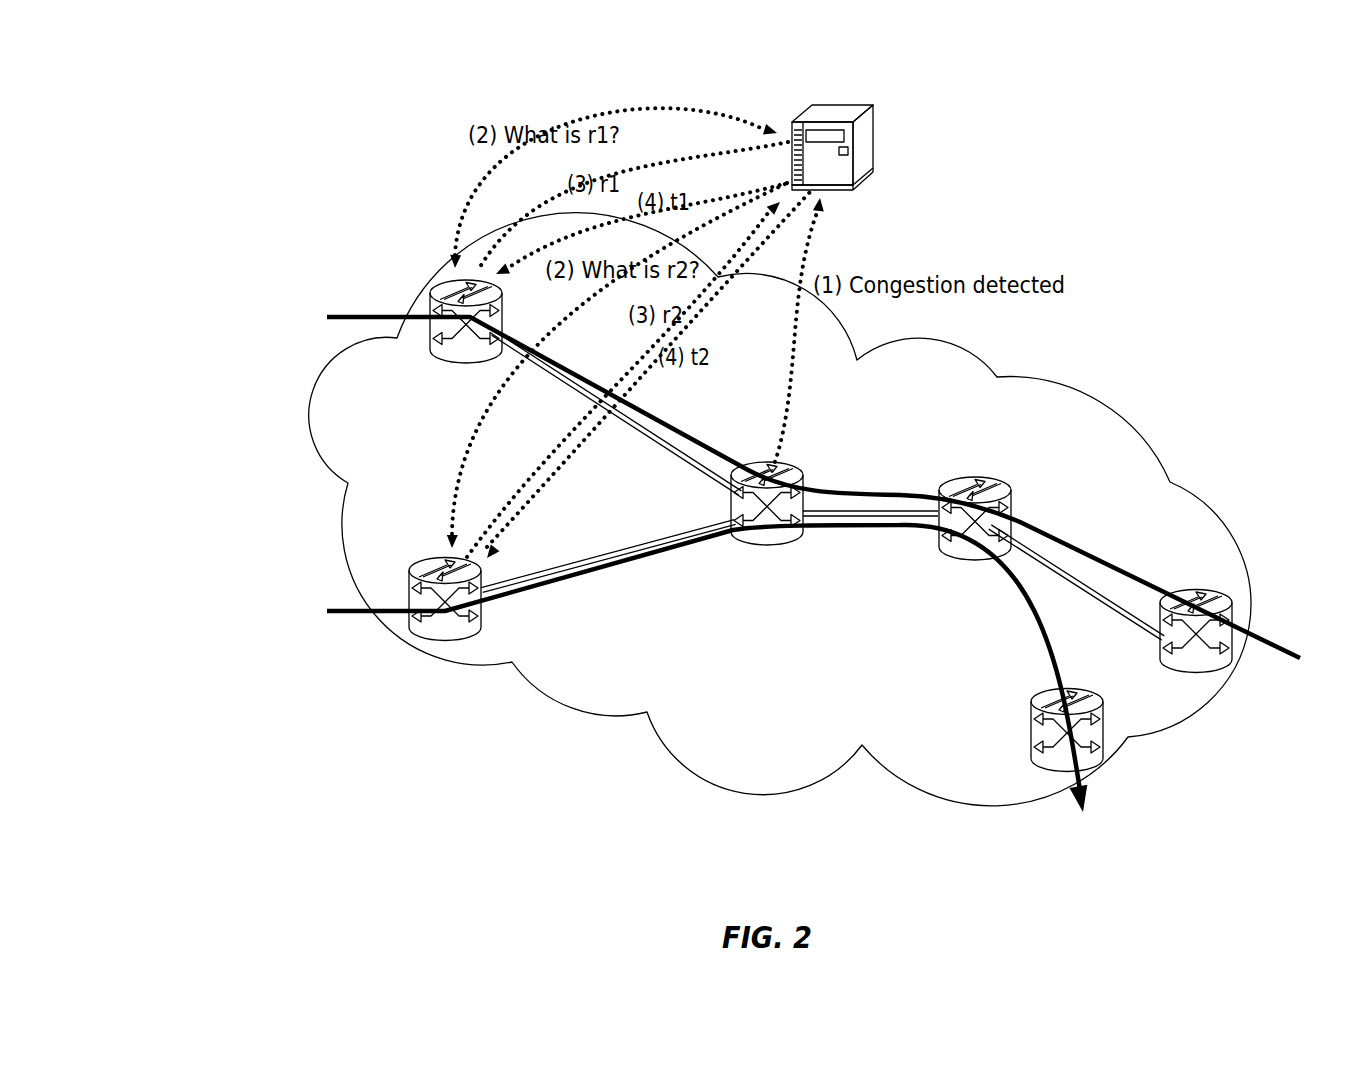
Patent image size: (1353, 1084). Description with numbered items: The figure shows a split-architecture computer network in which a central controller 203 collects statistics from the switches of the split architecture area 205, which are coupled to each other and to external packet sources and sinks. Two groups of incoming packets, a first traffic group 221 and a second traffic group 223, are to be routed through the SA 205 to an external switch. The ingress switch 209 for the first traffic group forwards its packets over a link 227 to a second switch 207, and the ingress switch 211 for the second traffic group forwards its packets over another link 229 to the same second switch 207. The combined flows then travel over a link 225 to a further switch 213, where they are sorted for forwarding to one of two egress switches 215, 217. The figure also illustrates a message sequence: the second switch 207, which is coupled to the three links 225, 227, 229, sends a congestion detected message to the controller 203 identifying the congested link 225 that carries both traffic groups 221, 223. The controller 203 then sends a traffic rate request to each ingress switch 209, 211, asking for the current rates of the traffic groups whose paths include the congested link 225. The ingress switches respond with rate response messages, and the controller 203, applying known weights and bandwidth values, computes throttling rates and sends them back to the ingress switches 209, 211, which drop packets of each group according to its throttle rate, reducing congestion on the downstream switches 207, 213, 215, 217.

The central controller 203 is at (878, 118).
The split architecture area 205 is at (742, 793).
The second switch 207 is at (767, 545).
The ingress switch 209 is at (441, 360).
The ingress switch 211 is at (418, 558).
The further switch 213 is at (993, 478).
The egress switch 215 is at (1208, 585).
The egress switch 217 is at (1028, 718).
The traffic group 1 221 is at (192, 292).
The traffic group 2 223 is at (177, 584).
The congested link 225 is at (870, 513).
The link 227 is at (673, 457).
The link 229 is at (610, 548).